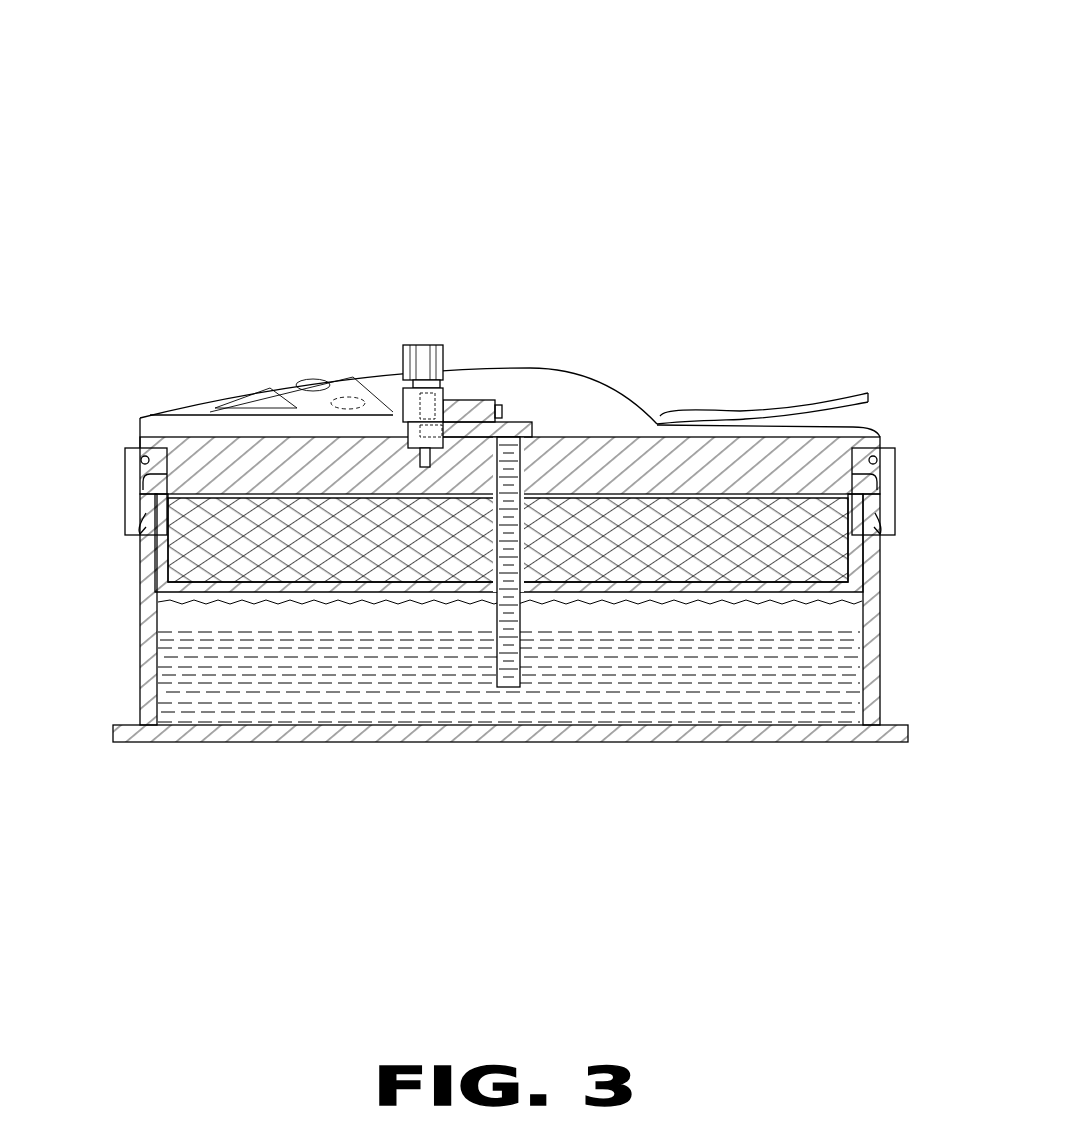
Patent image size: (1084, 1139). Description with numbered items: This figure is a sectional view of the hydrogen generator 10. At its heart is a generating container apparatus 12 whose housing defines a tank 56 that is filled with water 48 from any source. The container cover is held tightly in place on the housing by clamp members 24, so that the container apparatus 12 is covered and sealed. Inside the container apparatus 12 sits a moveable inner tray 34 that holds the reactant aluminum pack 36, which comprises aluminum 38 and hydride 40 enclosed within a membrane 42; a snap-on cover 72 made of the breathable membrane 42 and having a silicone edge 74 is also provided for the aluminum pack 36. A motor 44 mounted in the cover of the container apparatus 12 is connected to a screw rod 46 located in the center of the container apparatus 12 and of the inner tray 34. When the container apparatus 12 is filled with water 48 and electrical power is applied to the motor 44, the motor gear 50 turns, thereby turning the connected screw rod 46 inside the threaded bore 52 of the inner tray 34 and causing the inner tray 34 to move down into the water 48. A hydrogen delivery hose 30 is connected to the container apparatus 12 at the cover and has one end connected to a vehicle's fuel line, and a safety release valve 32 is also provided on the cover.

The hydrogen generator 10 is at (738, 103).
The container apparatus 12 is at (278, 265).
The clamp member 24 is at (130, 447).
The hydrogen delivery hose 30 is at (755, 413).
The safety release valve 32 is at (425, 345).
The inner tray 34 is at (722, 590).
The aluminum pack 36 is at (284, 562).
The aluminum 38 is at (317, 517).
The hydride 40 is at (248, 537).
The membrane 42 is at (223, 533).
The motor 44 is at (497, 400).
The screw rod 46 is at (513, 655).
The water 48 is at (478, 698).
The motor gear 50 is at (533, 422).
The threaded bore of inner tray 52 is at (495, 588).
The tank 56 is at (810, 720).
The snap-on cover of aluminum pack 72 is at (788, 497).
The silicone edge of snap-on cover 74 is at (835, 497).